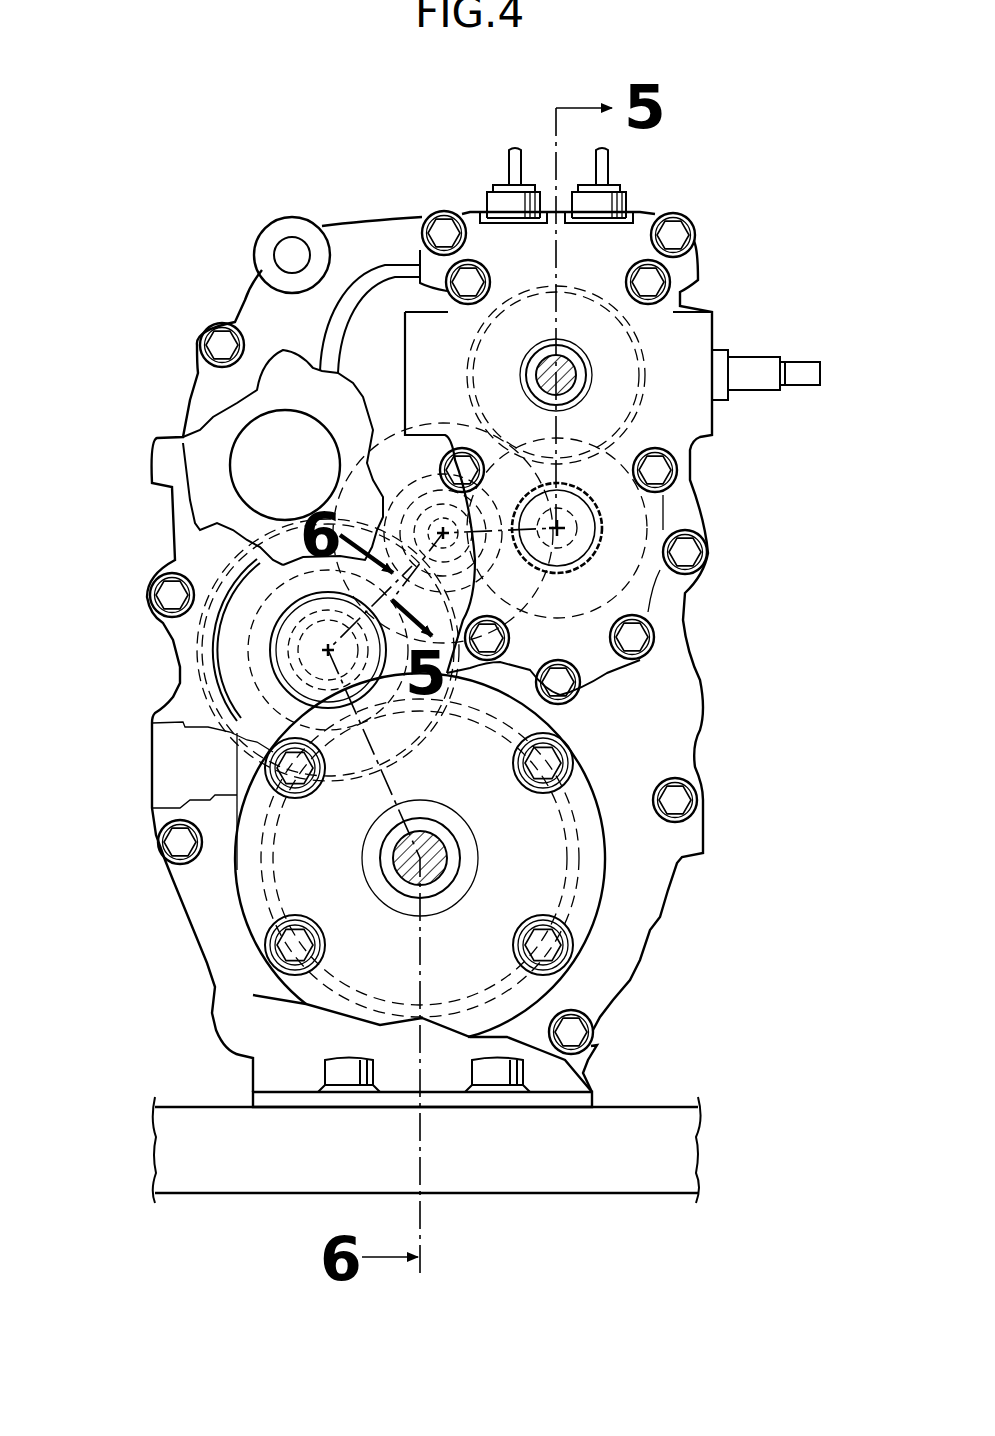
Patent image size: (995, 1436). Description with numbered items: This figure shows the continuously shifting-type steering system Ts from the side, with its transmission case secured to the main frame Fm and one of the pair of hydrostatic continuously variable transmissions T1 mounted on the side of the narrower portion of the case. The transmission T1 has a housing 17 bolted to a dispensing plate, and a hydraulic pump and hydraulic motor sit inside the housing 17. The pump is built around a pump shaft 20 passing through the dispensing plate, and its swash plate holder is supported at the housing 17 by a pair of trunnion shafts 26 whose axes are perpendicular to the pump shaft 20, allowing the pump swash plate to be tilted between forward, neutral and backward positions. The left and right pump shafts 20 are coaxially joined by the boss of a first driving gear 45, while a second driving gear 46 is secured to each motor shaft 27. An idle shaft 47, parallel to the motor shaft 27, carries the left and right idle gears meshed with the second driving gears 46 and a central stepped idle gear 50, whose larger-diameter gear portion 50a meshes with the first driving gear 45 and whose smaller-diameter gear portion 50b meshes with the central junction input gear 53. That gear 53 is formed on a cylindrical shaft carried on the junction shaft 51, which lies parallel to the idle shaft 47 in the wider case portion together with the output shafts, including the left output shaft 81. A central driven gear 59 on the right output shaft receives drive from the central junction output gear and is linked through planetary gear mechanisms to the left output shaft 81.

The housing 17 is at (695, 415).
The pump shaft 20 is at (588, 379).
The trunnion shafts 26 is at (763, 362).
The motor shaft 27 is at (590, 555).
The first driving gear 45 is at (534, 285).
The second driving gears 46 is at (603, 516).
The idle shaft 47 is at (443, 533).
The central stepped idle gear 50 is at (441, 395).
The larger-diameter gear portion 50a is at (384, 420).
The smaller-diameter gear portion 50b is at (346, 493).
The junction shaft 51 is at (300, 642).
The central junction input gear 53 is at (210, 638).
The central driven gear 59 is at (582, 822).
The left output shaft 81 is at (462, 866).
The continuously shifting-type steering system Ts is at (708, 251).
The hydrostatic continuously variable transmission T1 is at (685, 337).
The main frame Fm is at (643, 1185).